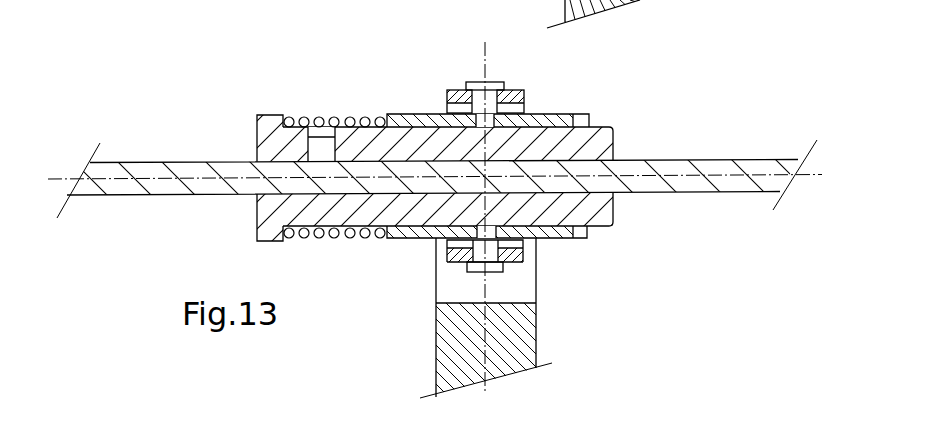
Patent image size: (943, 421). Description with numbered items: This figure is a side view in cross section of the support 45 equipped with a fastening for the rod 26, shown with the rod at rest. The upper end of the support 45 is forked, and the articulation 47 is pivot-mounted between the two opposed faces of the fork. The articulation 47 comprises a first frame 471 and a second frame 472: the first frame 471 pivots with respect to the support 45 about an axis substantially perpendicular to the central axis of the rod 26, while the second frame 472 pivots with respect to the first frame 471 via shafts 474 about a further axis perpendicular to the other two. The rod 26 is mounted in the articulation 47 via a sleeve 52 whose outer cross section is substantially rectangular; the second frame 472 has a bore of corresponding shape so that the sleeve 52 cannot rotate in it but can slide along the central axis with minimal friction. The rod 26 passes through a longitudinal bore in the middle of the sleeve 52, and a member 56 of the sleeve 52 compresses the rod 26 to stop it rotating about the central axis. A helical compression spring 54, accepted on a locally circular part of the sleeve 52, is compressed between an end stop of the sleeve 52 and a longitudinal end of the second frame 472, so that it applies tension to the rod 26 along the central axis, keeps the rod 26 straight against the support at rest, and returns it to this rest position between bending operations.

The rod 26 is at (96, 192).
The support 45 is at (447, 352).
The articulation 47 is at (489, 68).
The first frame 471 is at (523, 253).
The second frame 472 is at (580, 114).
The shafts 474 is at (498, 83).
The sleeve 52 is at (267, 140).
The compression spring 54 is at (352, 117).
The member 56 is at (325, 137).